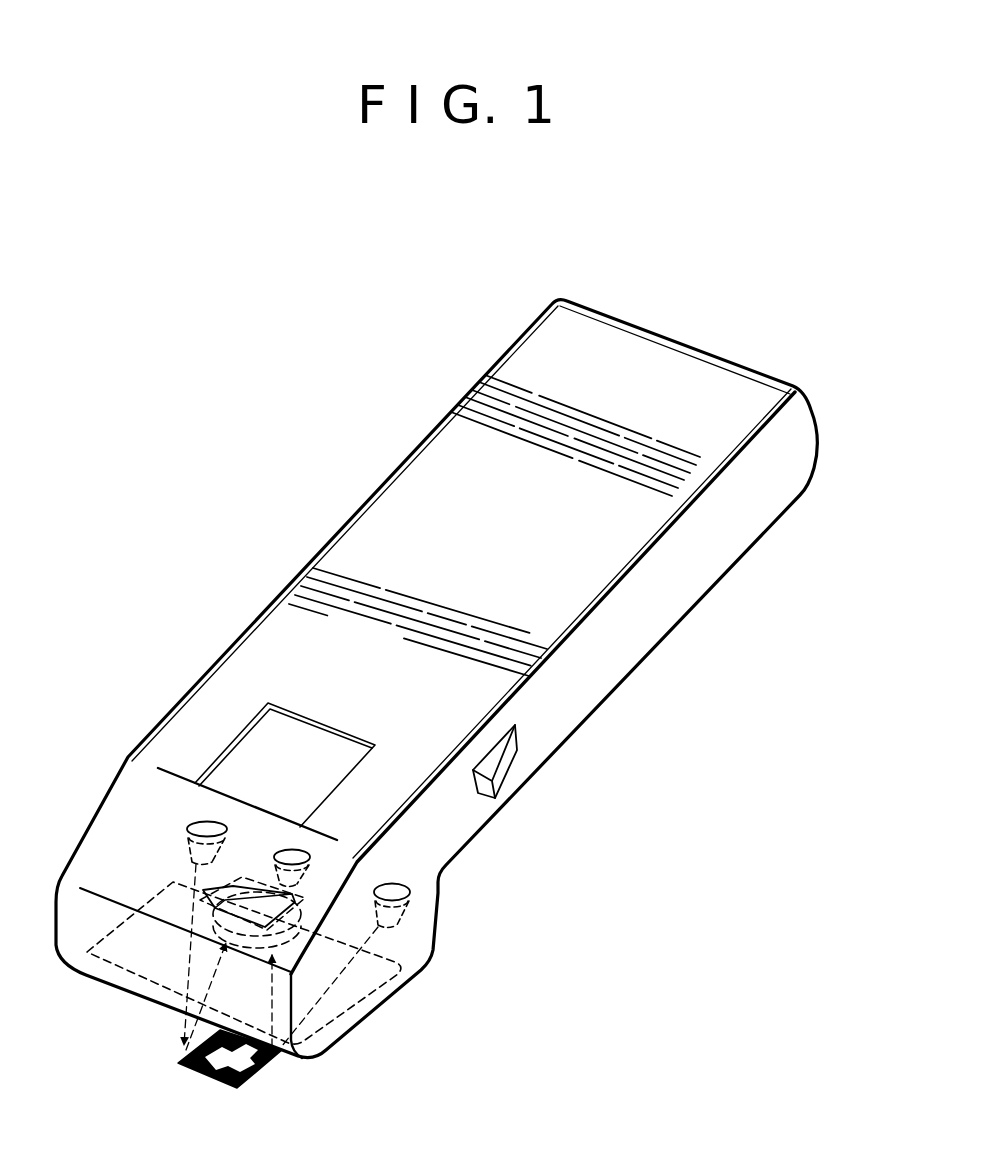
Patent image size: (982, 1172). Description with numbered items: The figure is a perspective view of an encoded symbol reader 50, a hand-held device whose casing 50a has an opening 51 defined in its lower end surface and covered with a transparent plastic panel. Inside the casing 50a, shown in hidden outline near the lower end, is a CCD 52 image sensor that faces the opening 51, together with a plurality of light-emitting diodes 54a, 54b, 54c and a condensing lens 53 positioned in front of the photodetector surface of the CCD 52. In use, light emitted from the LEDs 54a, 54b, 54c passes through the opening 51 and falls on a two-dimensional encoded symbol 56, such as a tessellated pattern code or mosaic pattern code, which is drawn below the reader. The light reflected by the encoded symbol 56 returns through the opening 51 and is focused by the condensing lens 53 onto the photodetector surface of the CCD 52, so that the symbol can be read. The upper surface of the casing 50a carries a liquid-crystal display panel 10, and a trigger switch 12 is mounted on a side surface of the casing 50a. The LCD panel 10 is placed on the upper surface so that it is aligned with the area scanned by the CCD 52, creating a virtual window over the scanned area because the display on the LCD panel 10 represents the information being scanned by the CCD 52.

The liquid-crystal display (LCD) panel 10 is at (263, 733).
The trigger switch 12 is at (515, 745).
The encoded symbol reader 50 is at (640, 683).
The casing 50a is at (500, 817).
The opening 51 is at (367, 1003).
The CCD image sensor 52 is at (175, 882).
The condensing lens 53 is at (287, 943).
The light-emitting diode 54a is at (193, 822).
The light-emitting diode 54b is at (310, 850).
The light-emitting diode 54c is at (410, 894).
The two-dimensional encoded symbol 56 is at (265, 1067).